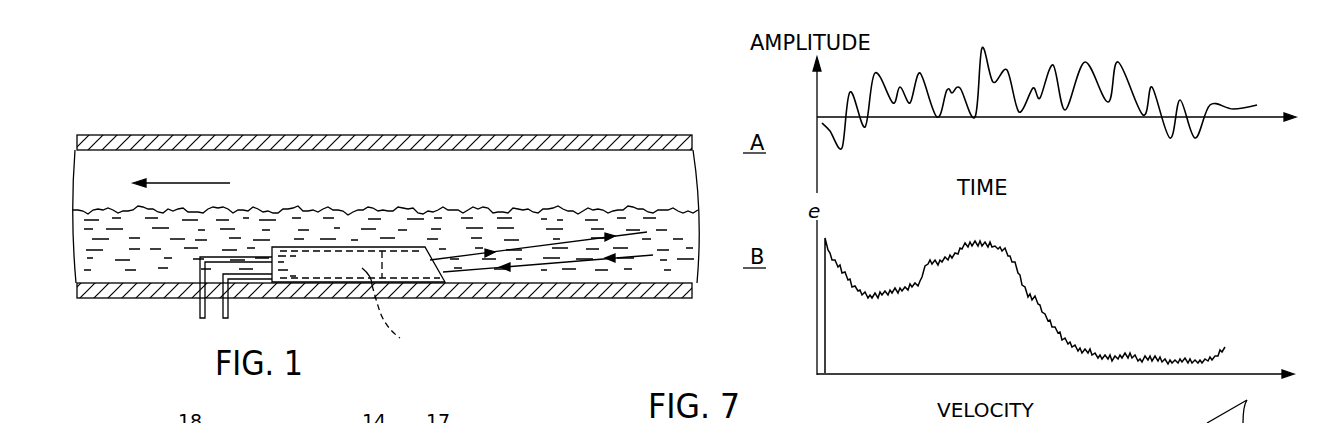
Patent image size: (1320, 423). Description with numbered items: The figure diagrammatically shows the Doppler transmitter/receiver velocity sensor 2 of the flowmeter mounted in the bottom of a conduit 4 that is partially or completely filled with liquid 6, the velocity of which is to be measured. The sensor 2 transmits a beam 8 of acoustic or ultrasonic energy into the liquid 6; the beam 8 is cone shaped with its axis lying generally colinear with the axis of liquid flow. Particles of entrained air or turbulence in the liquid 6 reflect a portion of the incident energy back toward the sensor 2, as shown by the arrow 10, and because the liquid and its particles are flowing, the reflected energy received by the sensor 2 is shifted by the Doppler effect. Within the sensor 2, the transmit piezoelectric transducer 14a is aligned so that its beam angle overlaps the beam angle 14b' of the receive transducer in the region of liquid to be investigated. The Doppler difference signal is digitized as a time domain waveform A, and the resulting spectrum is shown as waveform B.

In FIG. 1, the Doppler velocity sensor 2 is at (400, 236).
In FIG. 1, the conduit 4 is at (511, 294).
In FIG. 1, the liquid 6 is at (311, 200).
In FIG. 1, the beam 8 is at (557, 243).
In FIG. 1, the arrow 10 is at (588, 261).
In FIG. 1, the transmit piezoelectric transducer 14a is at (399, 309).
In FIG. 7, the beam angle of receive transducer 14b' is at (1195, 410).